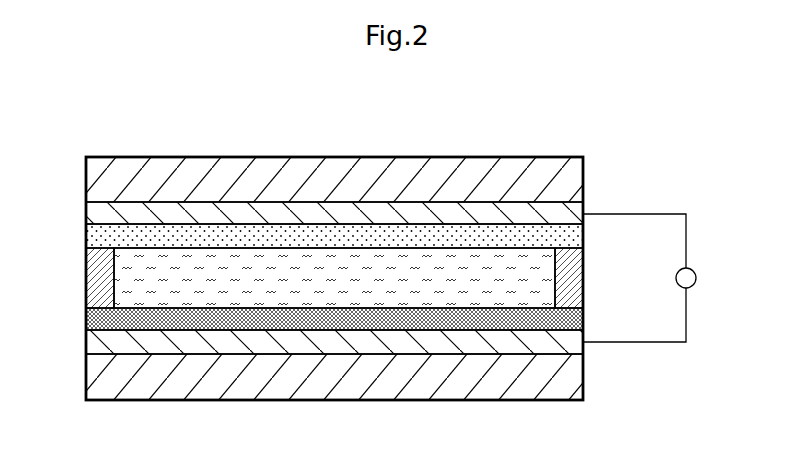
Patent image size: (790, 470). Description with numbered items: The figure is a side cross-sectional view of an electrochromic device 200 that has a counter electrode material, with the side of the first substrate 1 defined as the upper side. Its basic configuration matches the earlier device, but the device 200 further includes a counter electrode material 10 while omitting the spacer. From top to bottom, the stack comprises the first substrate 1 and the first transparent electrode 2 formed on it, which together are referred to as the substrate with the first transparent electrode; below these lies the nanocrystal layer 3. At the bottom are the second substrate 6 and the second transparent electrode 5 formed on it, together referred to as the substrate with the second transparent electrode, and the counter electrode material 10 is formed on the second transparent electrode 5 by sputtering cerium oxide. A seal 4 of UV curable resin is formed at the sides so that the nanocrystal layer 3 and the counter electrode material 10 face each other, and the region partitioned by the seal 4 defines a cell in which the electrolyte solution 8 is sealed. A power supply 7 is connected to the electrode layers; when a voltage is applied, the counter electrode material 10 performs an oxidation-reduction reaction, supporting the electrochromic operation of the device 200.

The electrochromic device 200 is at (555, 124).
The first substrate 1 is at (584, 180).
The first transparent electrode 2 is at (88, 207).
The nanocrystal layer 3 is at (584, 234).
The seal 4 is at (90, 277).
The electrolyte solution 8 is at (475, 277).
The counter electrode material 10 is at (91, 318).
The second transparent electrode 5 is at (90, 346).
The second substrate 6 is at (584, 378).
The power supply 7 is at (695, 272).